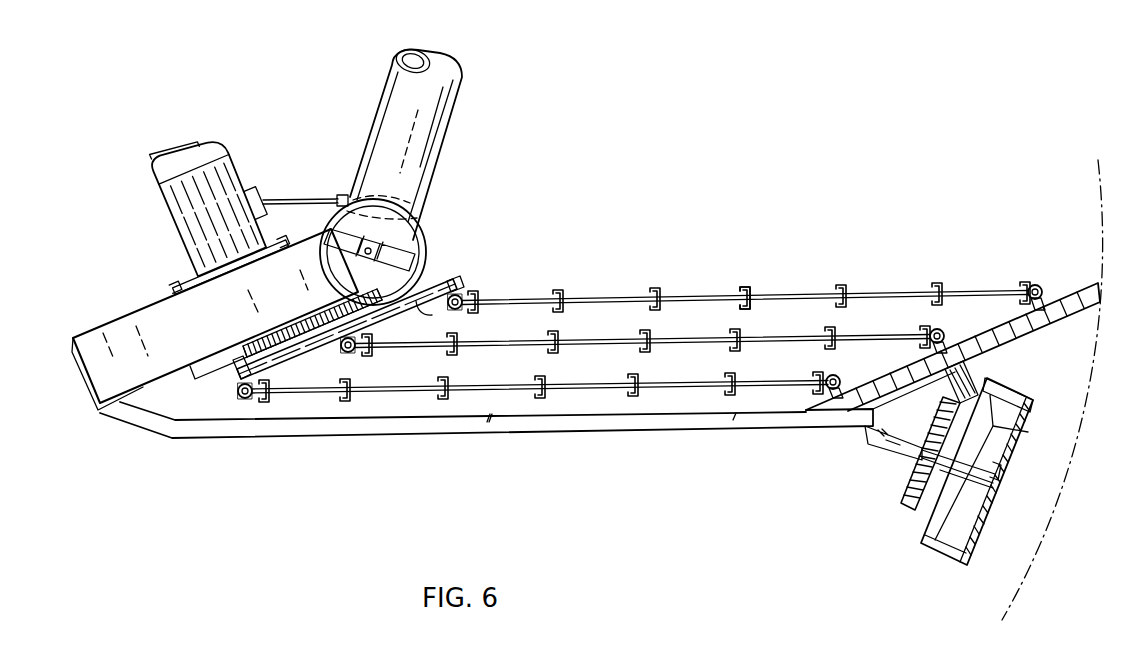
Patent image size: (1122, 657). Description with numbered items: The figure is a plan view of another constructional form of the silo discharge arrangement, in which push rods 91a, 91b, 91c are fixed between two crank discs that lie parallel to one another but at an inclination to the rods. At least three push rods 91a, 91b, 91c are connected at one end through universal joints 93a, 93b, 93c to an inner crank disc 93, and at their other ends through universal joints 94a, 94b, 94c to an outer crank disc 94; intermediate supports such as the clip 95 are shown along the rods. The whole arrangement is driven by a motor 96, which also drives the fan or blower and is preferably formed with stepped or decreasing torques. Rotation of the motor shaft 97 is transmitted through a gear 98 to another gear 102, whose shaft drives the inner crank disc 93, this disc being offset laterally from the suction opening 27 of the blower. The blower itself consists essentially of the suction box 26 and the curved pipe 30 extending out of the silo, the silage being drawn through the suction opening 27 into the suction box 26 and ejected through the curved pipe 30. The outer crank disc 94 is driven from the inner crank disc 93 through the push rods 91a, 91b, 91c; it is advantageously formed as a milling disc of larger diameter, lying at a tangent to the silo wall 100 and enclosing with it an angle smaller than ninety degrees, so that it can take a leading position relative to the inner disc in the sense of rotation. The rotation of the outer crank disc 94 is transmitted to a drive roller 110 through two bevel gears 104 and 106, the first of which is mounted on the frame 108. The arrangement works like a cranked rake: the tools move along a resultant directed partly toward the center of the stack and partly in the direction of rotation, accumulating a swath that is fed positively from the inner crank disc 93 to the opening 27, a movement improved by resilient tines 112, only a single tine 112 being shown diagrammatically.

The suction box 26 is at (160, 312).
The suction opening 27 is at (222, 383).
The curved pipe 30 is at (447, 117).
The push rod 91a is at (740, 384).
The push rod 91b is at (858, 340).
The push rod 91c is at (868, 296).
The crank disc 93 is at (462, 288).
The universal joint 93a is at (244, 400).
The universal joint 93b is at (343, 351).
The universal joint 93c is at (465, 300).
The crank disc 94 is at (1075, 308).
The universal joint 94a is at (841, 381).
The universal joint 94b is at (945, 335).
The universal joint 94c is at (1042, 289).
The rail clip 95 is at (745, 294).
The motor 96 is at (212, 150).
The shaft 97 is at (262, 348).
The gear 98 is at (238, 351).
The arc path 100 is at (1097, 175).
The gear 102 is at (426, 283).
The bevel gear 104 is at (1005, 388).
The bevel gear 106 is at (912, 494).
The frame 108 is at (541, 428).
The drive roller 110 is at (930, 533).
The resilient tine 112 is at (432, 315).